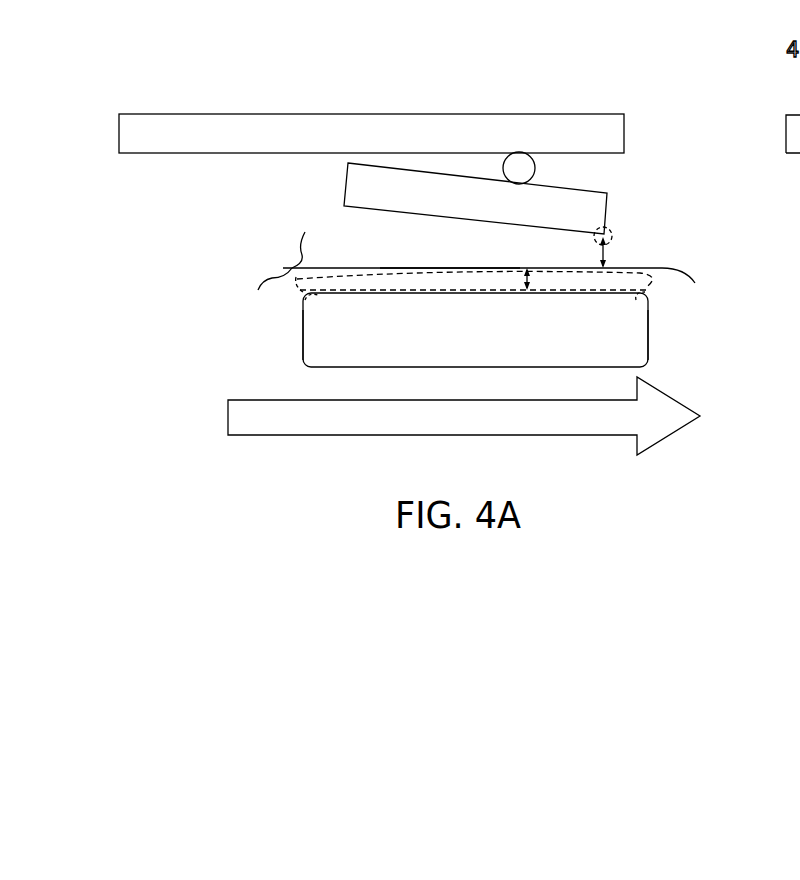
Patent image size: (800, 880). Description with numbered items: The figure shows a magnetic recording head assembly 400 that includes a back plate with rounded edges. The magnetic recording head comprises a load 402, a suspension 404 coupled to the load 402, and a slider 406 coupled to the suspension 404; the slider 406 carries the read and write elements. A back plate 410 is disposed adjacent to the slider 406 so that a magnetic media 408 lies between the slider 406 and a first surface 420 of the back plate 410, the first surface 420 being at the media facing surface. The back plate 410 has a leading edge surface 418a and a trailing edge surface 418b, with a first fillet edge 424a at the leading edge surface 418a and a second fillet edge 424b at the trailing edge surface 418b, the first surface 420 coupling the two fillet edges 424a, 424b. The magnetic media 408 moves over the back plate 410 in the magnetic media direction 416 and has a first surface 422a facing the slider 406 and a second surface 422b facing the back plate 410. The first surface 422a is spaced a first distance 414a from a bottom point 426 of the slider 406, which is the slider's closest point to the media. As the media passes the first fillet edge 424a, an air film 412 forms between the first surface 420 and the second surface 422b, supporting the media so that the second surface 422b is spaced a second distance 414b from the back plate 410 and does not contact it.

The magnetic recording head assembly 400 is at (213, 80).
The load 402 is at (388, 147).
The suspension 404 is at (535, 169).
The slider 406 is at (497, 211).
The magnetic media 408 is at (292, 268).
The back plate 410 is at (497, 335).
The air film 412 is at (447, 267).
The first distance 414a is at (606, 251).
The second distance 414b is at (524, 275).
The magnetic media direction 416 is at (649, 429).
The leading edge surface 418a is at (303, 337).
The trailing edge surface 418b is at (648, 337).
The first surface 420 is at (427, 291).
The first surface 422a is at (303, 238).
The second surface 422b is at (257, 294).
The first fillet edge 424a is at (314, 301).
The second fillet edge 424b is at (652, 298).
The bottom point 426 is at (608, 235).